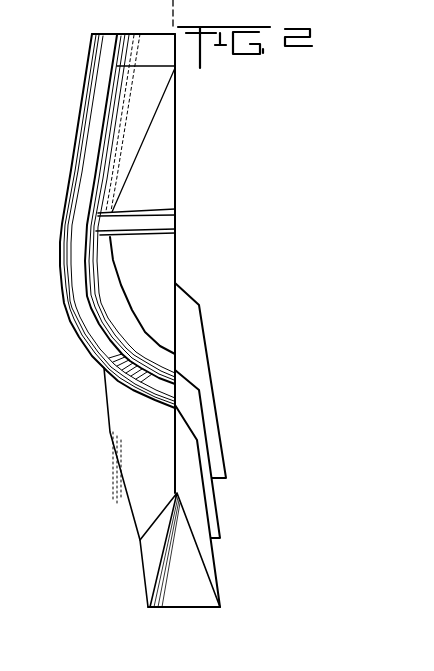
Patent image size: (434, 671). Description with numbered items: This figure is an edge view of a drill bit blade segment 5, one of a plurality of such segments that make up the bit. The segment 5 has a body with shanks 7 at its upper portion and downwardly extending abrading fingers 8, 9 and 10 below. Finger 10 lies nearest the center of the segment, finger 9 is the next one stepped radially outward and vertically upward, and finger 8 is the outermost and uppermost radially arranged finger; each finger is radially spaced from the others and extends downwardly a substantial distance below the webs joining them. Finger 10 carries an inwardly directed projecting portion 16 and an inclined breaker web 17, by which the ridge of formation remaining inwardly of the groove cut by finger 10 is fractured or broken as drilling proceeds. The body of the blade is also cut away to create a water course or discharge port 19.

The blade segment 5 is at (68, 232).
The shanks 7 is at (97, 74).
The abrading finger 8 is at (222, 457).
The abrading finger 9 is at (216, 507).
The abrading finger 10 is at (218, 586).
The inwardly directed projecting portion 16 is at (177, 484).
The inclined breaker web 17 is at (184, 600).
The water course or discharge port 19 is at (143, 392).